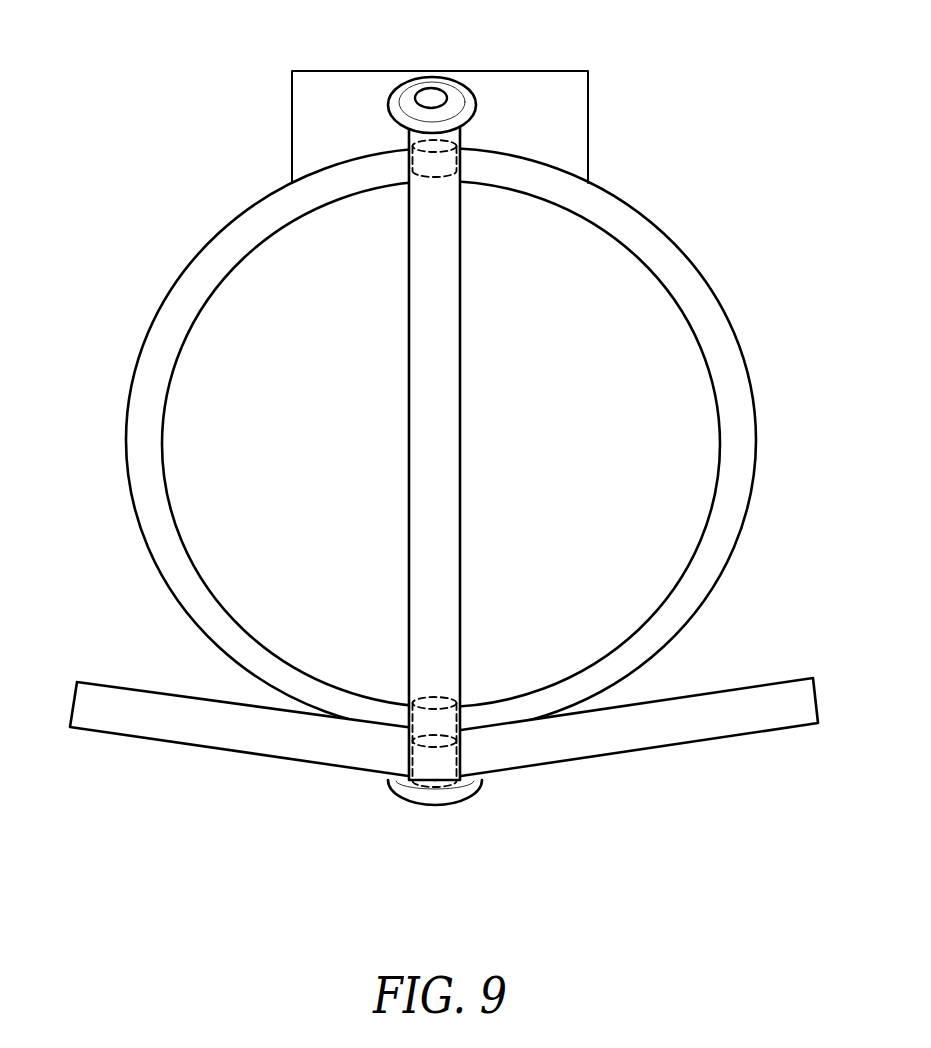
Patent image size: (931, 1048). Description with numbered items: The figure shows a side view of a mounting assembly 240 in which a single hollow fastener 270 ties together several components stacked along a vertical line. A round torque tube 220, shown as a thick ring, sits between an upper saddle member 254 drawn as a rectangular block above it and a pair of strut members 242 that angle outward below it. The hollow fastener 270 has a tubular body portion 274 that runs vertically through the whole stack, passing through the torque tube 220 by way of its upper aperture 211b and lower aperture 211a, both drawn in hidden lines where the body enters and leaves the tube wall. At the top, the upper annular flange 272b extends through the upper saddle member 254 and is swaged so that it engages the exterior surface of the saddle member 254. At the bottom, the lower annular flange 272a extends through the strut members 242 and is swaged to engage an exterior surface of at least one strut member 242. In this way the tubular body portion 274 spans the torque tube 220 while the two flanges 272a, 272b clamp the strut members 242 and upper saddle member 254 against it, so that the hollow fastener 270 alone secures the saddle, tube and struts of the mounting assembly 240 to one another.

The mounting assembly 240 is at (163, 80).
The upper saddle member 254 is at (568, 91).
The torque tube 220 is at (200, 282).
The strut members 242 is at (142, 722).
The hollow fastener 270 is at (450, 438).
The tubular body portion 274 is at (430, 455).
The lower annular flange 272a is at (432, 797).
The upper annular flange 272b is at (448, 88).
The lower aperture 211a is at (458, 745).
The upper aperture 211b is at (456, 151).